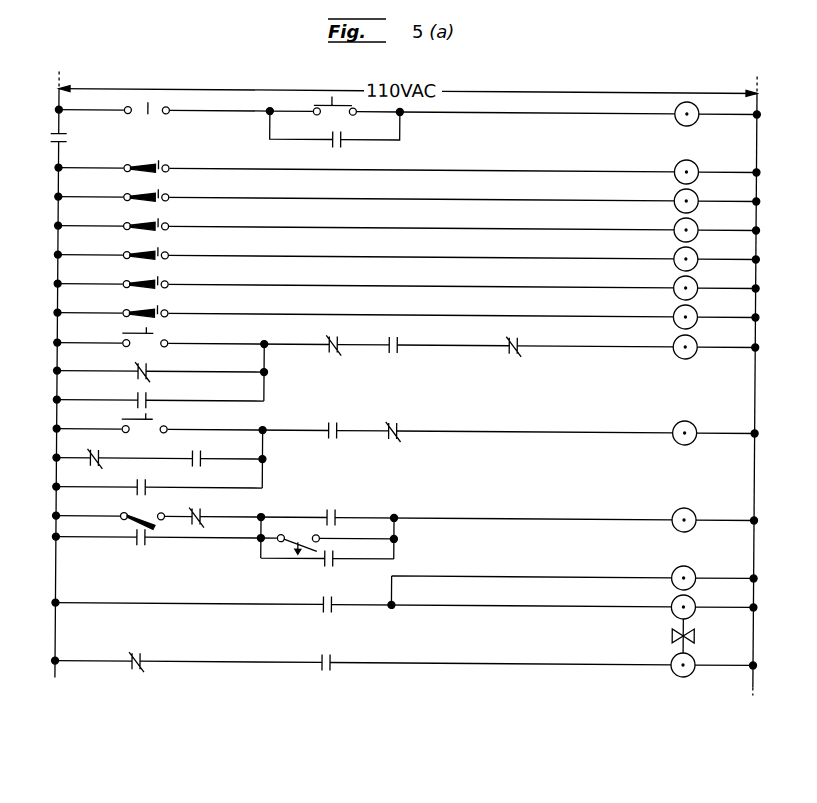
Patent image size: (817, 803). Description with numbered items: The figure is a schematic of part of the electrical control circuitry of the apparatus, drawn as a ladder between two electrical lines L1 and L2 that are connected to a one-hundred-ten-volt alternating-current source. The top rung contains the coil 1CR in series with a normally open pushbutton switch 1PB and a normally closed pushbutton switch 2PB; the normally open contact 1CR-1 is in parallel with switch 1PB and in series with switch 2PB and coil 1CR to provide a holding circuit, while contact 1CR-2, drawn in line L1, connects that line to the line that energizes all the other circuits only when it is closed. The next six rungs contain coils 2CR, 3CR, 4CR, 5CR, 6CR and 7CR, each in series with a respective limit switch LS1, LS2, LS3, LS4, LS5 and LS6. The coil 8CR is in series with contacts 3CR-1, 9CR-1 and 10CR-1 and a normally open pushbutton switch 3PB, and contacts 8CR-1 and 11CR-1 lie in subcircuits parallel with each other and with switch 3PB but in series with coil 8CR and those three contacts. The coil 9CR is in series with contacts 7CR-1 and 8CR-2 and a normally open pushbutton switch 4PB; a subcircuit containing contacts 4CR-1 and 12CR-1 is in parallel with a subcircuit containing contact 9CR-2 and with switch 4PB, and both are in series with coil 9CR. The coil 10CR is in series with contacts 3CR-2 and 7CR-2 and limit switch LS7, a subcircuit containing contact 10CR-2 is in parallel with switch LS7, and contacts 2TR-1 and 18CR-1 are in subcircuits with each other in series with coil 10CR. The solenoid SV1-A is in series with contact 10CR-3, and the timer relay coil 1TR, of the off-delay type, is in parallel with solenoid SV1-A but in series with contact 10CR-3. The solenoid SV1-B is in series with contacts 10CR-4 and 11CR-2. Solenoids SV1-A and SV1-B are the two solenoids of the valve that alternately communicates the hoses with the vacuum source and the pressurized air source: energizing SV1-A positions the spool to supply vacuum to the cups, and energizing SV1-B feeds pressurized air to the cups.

The electrical line L1 is at (57, 83).
The electrical line L2 is at (758, 99).
The normally closed pushbutton switch 2PB is at (147, 116).
The normally open pushbutton switch 1PB is at (331, 112).
The normally open contact 1CR-1 is at (336, 148).
The normally open contact 1CR-2 is at (66, 140).
The relay coil 1CR is at (694, 123).
The limit switch LS1 is at (159, 165).
The limit switch LS2 is at (159, 194).
The limit switch LS3 is at (159, 223).
The limit switch LS4 is at (159, 252).
The limit switch LS5 is at (159, 281).
The limit switch LS6 is at (159, 310).
The limit switch LS7 is at (140, 515).
The relay coil 2CR is at (692, 161).
The relay coil 3CR is at (692, 190).
The relay coil 4CR is at (692, 219).
The relay coil 5CR is at (692, 248).
The relay coil 6CR is at (692, 277).
The relay coil 7CR is at (692, 306).
The relay coil 8CR is at (692, 336).
The relay coil 9CR is at (692, 422).
The relay coil 10CR is at (692, 509).
The normally open pushbutton switch 3PB is at (159, 339).
The normally open pushbutton switch 4PB is at (159, 424).
The normally closed contact 10CR-1 is at (338, 337).
The normally open contact 3CR-1 is at (393, 337).
The normally closed contact 9CR-1 is at (513, 337).
The normally closed contact 11CR-1 is at (147, 366).
The normally open contact 8CR-1 is at (147, 396).
The normally open contact 7CR-1 is at (326, 424).
The normally closed contact 8CR-2 is at (393, 424).
The normally closed contact 4CR-1 is at (95, 453).
The normally open contact 12CR-1 is at (191, 453).
The normally open contact 9CR-2 is at (142, 482).
The normally closed contact 3CR-2 is at (195, 511).
The normally open contact 7CR-2 is at (333, 511).
The normally open contact 10CR-2 is at (141, 550).
The deenergized normally open, time-opening contact 2TR-1 is at (293, 534).
The normally open contact 18CR-1 is at (332, 567).
The timer relay coil 1TR is at (692, 567).
The normally open contact 10CR-3 is at (329, 612).
The solenoid SV1-A is at (692, 596).
The solenoid SV1-B is at (692, 654).
The normally closed contact 10CR-4 is at (140, 654).
The normally open contact 11CR-2 is at (328, 654).